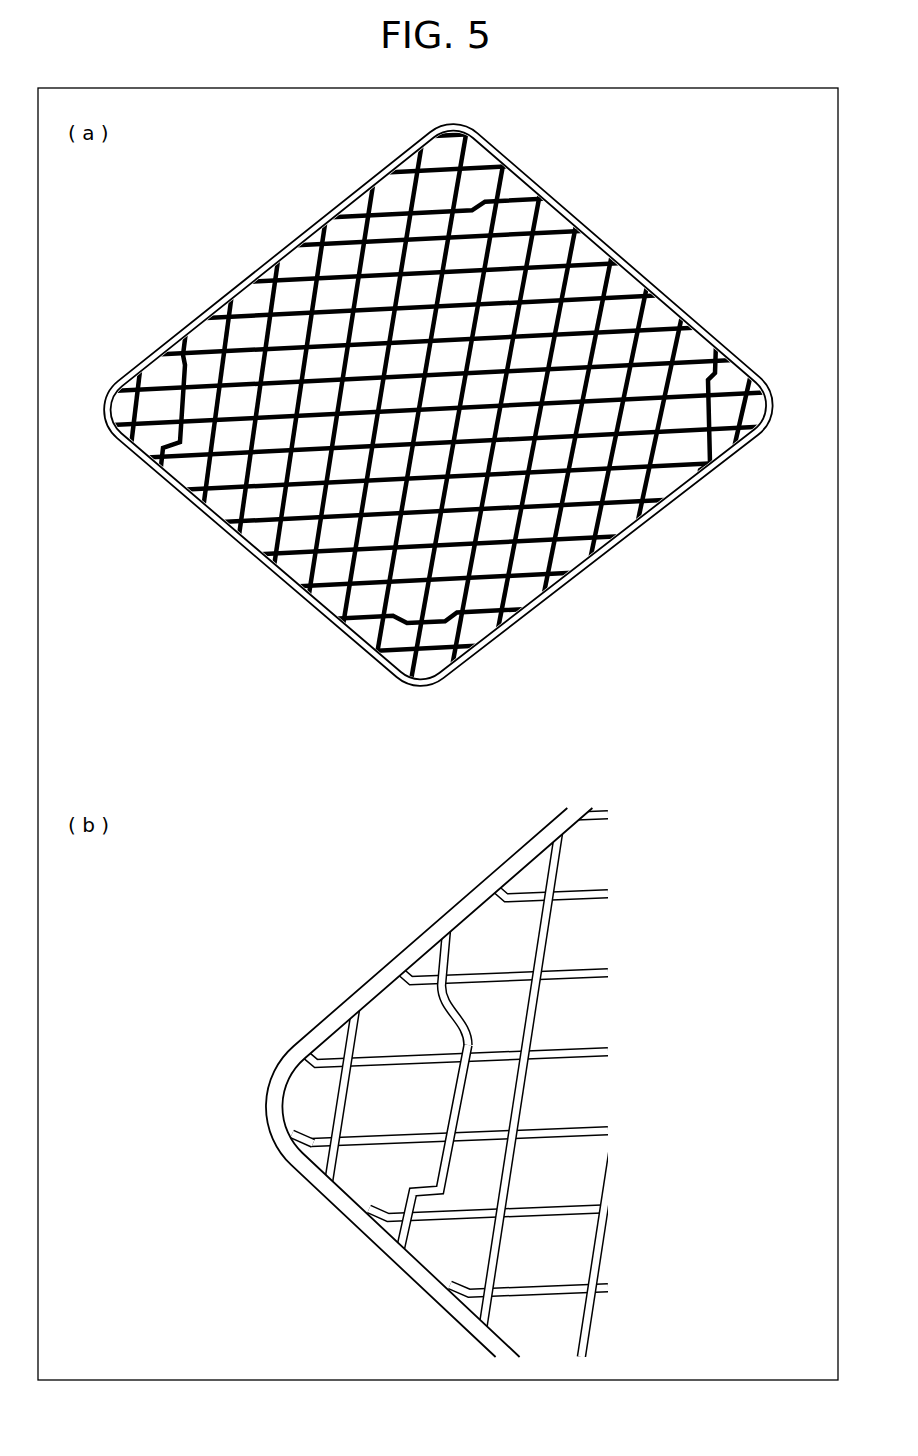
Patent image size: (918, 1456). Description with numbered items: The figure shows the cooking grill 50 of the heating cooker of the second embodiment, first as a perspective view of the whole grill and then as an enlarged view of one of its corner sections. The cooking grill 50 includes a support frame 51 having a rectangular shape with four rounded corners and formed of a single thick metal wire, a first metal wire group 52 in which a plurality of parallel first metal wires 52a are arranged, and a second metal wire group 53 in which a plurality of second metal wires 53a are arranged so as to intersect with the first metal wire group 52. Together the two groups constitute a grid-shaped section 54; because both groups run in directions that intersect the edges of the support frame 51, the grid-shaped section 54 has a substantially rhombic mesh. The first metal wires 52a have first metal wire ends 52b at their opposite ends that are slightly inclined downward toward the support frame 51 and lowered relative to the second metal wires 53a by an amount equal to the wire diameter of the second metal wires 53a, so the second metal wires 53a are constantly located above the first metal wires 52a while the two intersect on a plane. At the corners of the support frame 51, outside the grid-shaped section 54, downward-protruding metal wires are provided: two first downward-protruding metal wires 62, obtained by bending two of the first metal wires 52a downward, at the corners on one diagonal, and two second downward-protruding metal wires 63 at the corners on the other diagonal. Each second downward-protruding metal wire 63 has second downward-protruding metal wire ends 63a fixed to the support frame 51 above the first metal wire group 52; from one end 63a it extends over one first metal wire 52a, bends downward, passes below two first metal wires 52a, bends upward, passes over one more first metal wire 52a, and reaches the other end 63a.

The cooking grill 50 is at (238, 176).
The support frame 51 is at (352, 192).
The first metal wire group 52 is at (113, 221).
The first metal wire 52a is at (333, 229).
The first metal wire end 52b is at (287, 1155).
The second metal wire group 53 is at (665, 121).
The second metal wire 53a is at (467, 153).
The grid-shaped section 54 is at (437, 425).
The first downward-protruding metal wire 62 is at (463, 218).
The second downward-protruding metal wire 63 is at (178, 408).
The second downward-protruding metal wire end 63a is at (440, 928).